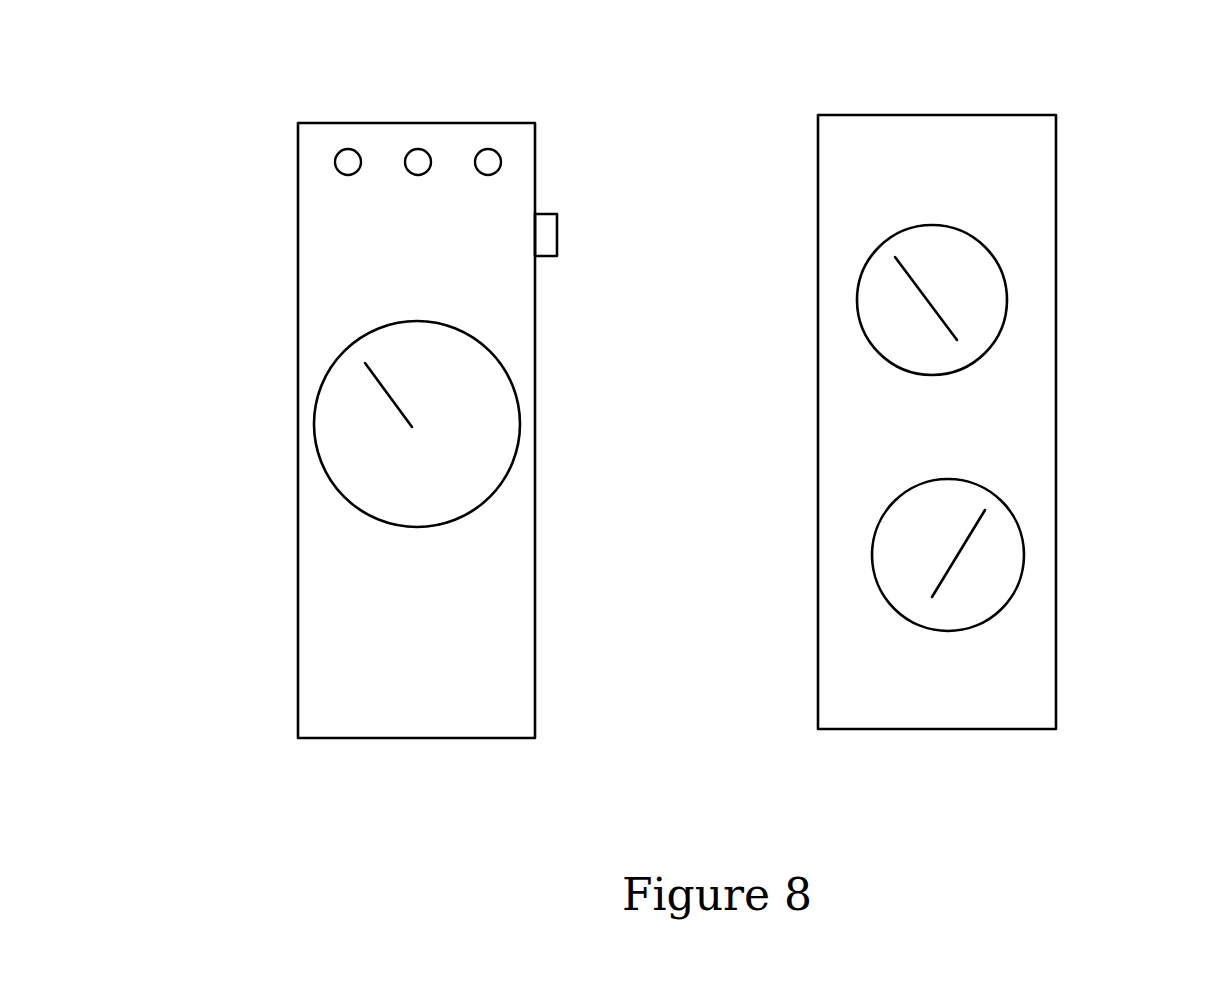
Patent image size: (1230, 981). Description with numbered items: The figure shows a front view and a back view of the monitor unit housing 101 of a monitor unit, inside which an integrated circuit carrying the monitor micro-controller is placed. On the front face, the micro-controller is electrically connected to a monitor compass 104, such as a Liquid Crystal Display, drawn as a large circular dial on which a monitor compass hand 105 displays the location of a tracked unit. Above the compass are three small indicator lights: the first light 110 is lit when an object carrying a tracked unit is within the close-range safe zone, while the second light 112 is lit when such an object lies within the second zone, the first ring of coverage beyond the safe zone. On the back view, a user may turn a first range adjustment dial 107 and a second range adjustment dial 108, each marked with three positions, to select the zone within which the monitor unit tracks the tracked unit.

The monitor unit housing 101 is at (770, 147).
The monitor compass 104 is at (338, 395).
The monitor compass hand 105 is at (398, 407).
The first range adjustment dial 107 is at (877, 295).
The second range adjustment dial 108 is at (903, 537).
The first light 110 is at (342, 162).
The second light 112 is at (417, 155).